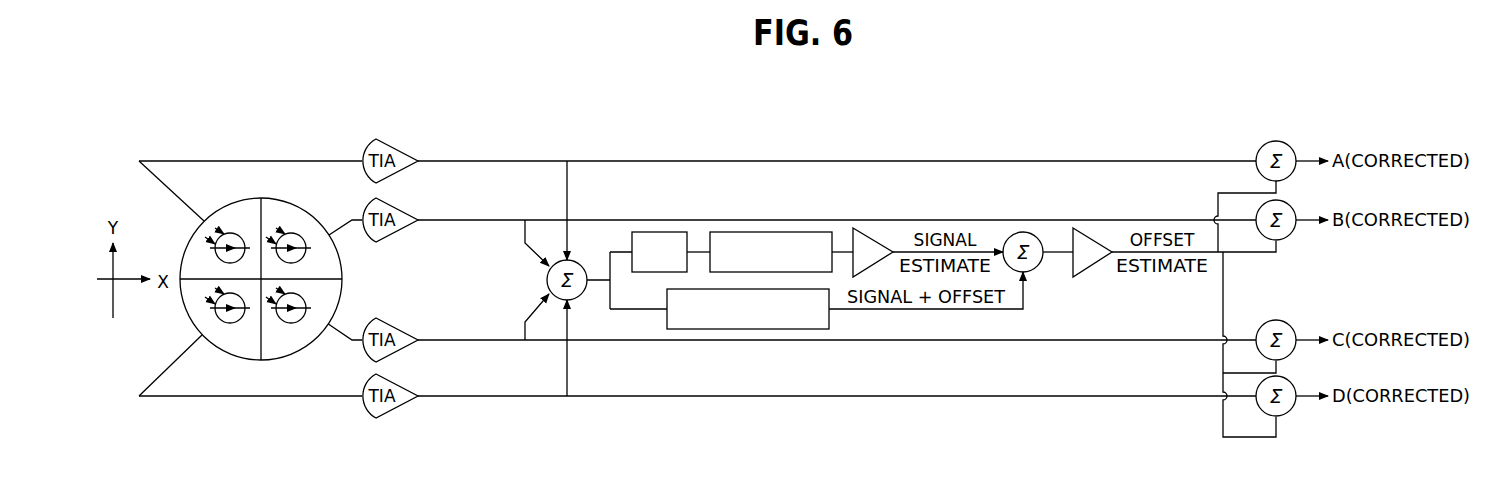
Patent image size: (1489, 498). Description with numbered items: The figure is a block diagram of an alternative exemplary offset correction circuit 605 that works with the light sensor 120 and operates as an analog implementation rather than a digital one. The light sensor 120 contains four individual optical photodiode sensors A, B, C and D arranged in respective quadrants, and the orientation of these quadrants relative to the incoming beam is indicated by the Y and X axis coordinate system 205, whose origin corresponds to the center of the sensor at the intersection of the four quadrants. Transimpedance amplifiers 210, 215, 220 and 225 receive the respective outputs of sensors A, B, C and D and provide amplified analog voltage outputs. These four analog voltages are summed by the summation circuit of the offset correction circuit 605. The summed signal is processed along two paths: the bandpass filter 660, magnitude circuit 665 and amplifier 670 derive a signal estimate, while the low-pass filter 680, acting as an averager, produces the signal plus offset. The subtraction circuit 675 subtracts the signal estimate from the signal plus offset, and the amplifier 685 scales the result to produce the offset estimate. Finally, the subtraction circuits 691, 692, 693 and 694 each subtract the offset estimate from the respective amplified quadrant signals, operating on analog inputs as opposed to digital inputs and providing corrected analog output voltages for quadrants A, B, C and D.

The X and Y axis coordinate system 205 is at (134, 221).
The light sensor 120 is at (253, 197).
The transimpedance amplifier 210 is at (396, 149).
The transimpedance amplifier 215 is at (396, 208).
The transimpedance amplifier 220 is at (396, 328).
The transimpedance amplifier 225 is at (396, 384).
The offset correction circuit 605 is at (600, 113).
The bandpass filter 660 is at (658, 232).
The magnitude circuit 665 is at (755, 232).
The amplifier 670 is at (871, 239).
The subtraction circuit 675 is at (1025, 233).
The low-pass filter 680 is at (728, 329).
The amplifier 685 is at (1090, 239).
The subtraction circuit 691 is at (1277, 141).
The subtraction circuit 692 is at (1291, 246).
The subtraction circuit 693 is at (1277, 320).
The subtraction circuit 694 is at (1291, 422).